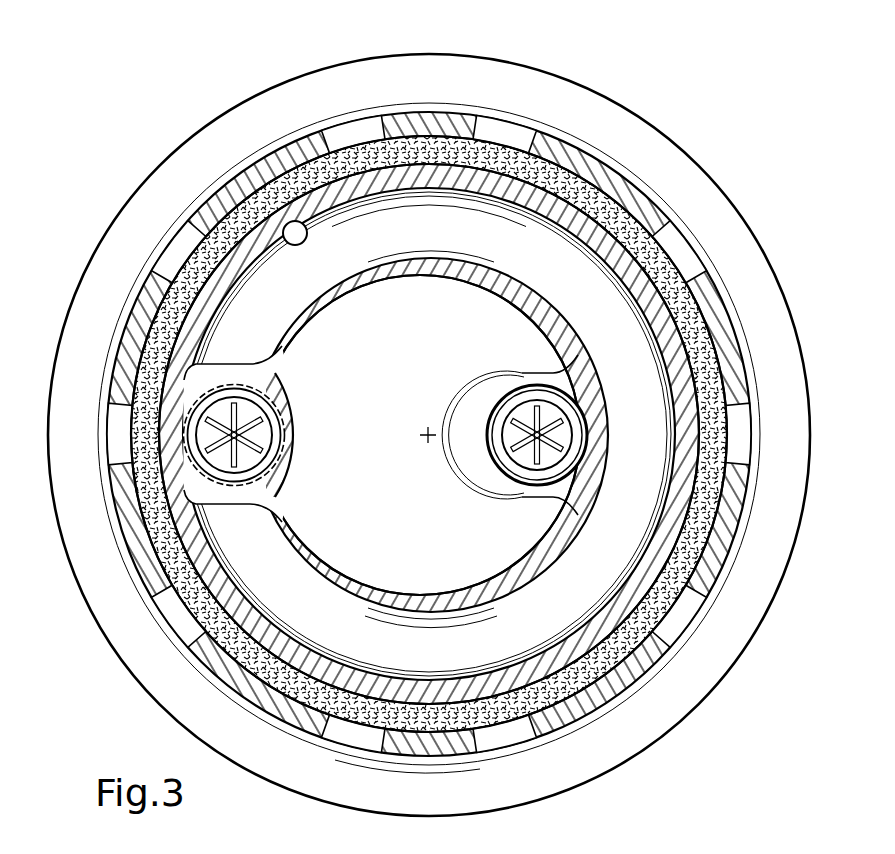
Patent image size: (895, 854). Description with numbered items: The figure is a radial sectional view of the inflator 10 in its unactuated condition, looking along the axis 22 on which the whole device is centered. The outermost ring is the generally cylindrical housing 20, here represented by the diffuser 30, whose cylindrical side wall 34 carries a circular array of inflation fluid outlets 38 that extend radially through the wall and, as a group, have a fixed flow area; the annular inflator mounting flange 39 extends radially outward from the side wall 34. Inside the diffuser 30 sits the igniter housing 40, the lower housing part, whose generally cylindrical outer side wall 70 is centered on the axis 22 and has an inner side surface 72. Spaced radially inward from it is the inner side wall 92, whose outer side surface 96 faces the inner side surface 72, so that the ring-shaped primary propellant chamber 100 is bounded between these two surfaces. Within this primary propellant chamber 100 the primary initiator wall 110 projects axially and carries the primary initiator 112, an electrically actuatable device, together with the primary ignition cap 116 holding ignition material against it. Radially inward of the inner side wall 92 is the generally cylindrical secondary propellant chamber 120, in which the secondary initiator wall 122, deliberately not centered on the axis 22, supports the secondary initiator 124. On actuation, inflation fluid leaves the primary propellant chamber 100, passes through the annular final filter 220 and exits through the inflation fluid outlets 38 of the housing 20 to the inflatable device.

The inflator 10 is at (765, 693).
The housing 20 is at (424, 435).
The axis 22 is at (426, 440).
The diffuser 30 is at (73, 579).
The side wall 34 is at (135, 315).
The inflation fluid outlets 38 is at (685, 250).
The inflator mounting flange 39 is at (63, 522).
The igniter housing 40 is at (690, 340).
The outer side wall 70 is at (250, 243).
The inner side surface 72 is at (293, 225).
The inner side wall 92 is at (537, 300).
The outer side surface 96 is at (517, 272).
The primary propellant chamber 100 is at (473, 223).
The primary initiator wall 110 is at (241, 506).
The primary initiator 112 is at (258, 436).
The primary ignition cap 116 is at (273, 465).
The secondary propellant chamber 120 is at (400, 348).
The secondary initiator wall 122 is at (527, 492).
The secondary initiator 124 is at (522, 457).
The final filter 220 is at (188, 255).